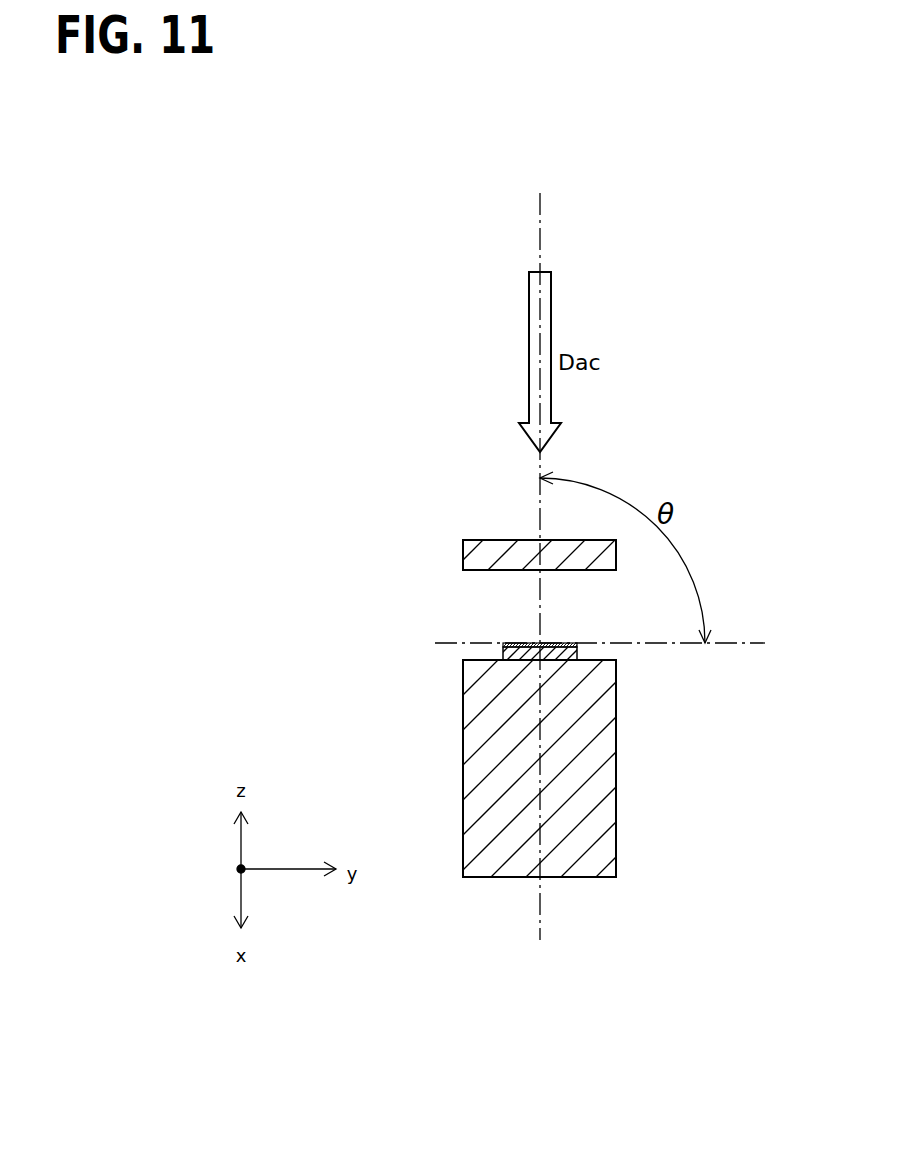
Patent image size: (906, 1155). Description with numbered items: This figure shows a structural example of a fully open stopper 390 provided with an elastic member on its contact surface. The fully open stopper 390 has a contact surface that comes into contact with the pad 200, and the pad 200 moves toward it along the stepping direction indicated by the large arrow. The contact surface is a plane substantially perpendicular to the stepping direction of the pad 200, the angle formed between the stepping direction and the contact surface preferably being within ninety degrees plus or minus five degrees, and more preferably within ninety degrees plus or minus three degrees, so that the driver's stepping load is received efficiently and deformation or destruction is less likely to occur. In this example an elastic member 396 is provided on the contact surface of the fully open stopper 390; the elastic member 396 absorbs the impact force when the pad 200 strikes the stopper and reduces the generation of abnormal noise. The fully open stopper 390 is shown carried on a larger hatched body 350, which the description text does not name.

The pad 200 is at (483, 540).
The stage 350 is at (600, 772).
The fully open stopper 390 is at (578, 651).
The elastic member 396 is at (512, 643).